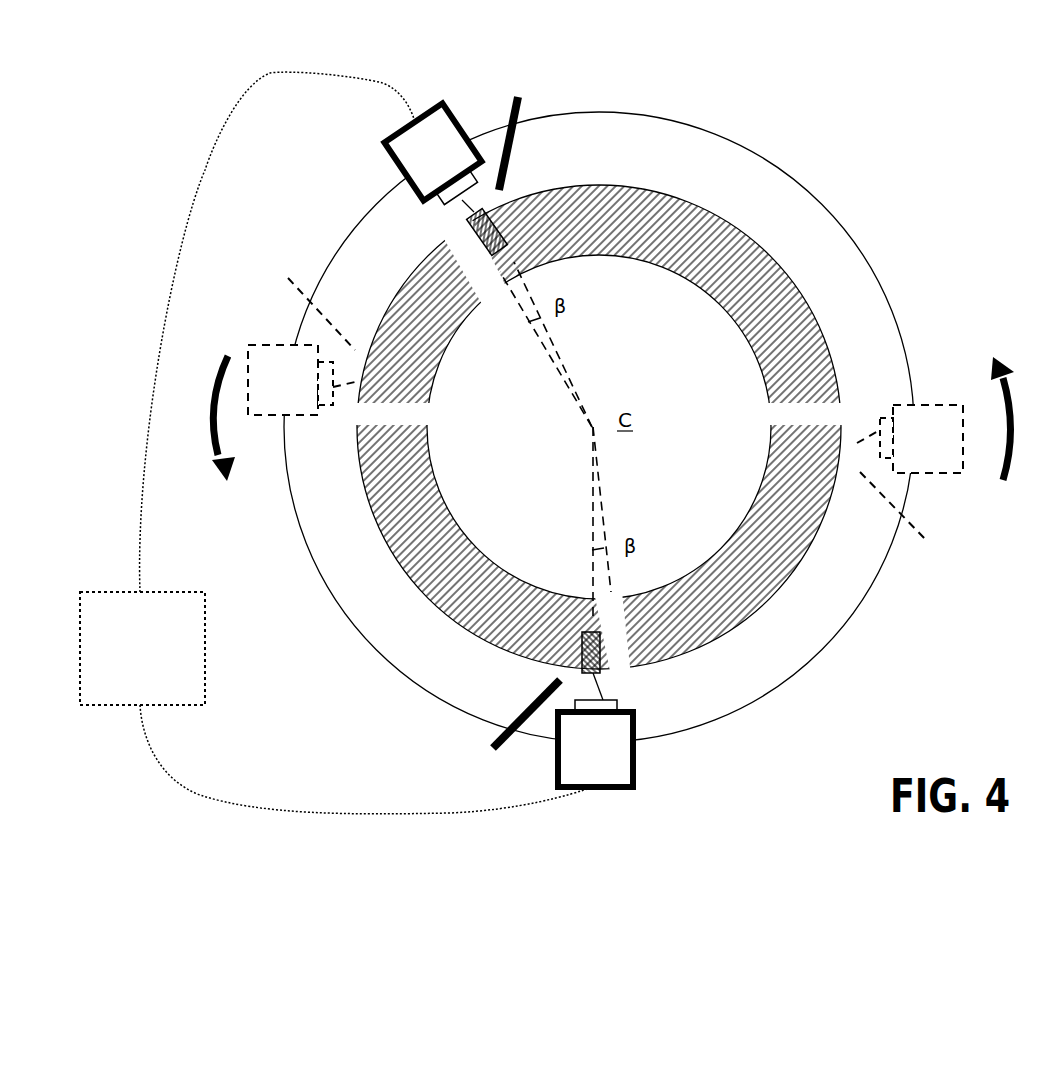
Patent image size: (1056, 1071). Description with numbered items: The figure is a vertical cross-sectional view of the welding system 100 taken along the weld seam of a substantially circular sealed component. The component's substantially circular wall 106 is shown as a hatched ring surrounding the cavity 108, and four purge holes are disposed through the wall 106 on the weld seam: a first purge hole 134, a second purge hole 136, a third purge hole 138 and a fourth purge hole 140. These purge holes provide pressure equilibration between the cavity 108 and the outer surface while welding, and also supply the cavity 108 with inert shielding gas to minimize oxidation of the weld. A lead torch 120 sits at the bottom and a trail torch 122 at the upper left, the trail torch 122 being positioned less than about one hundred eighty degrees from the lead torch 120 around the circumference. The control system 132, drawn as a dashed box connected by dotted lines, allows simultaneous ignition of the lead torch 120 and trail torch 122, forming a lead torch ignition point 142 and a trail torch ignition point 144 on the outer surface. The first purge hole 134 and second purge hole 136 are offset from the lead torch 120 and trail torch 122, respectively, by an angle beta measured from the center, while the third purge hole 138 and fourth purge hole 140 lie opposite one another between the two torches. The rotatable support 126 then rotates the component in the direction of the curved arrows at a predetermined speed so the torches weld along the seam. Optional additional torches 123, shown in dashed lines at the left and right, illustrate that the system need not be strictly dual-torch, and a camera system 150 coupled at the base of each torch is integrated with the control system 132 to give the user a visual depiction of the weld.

The welding system 100 is at (708, 119).
The substantially circular wall 106 is at (723, 228).
The cavity 108 is at (628, 376).
The lead torch 120 is at (596, 748).
The trail torch 122 is at (438, 127).
The additional torch 123 is at (278, 350).
The rotatable support 126 is at (860, 545).
The control system 132 is at (121, 654).
The first purge hole 134 is at (627, 661).
The second purge hole 136 is at (447, 250).
The third purge hole 138 is at (833, 408).
The fourth purge hole 140 is at (368, 417).
The lead torch ignition point 142 is at (573, 665).
The trail torch ignition point 144 is at (512, 206).
The camera system 150 is at (445, 198).